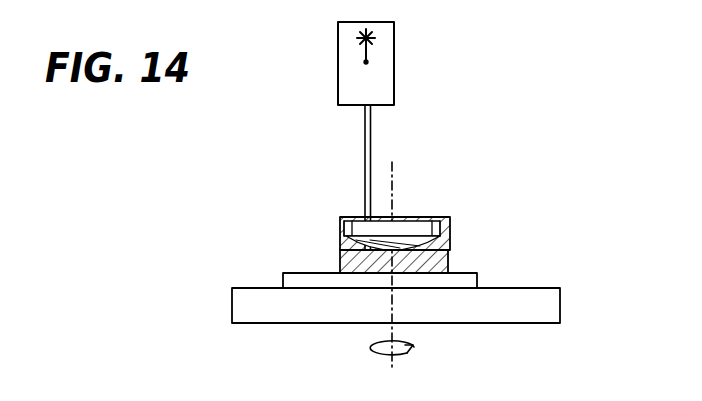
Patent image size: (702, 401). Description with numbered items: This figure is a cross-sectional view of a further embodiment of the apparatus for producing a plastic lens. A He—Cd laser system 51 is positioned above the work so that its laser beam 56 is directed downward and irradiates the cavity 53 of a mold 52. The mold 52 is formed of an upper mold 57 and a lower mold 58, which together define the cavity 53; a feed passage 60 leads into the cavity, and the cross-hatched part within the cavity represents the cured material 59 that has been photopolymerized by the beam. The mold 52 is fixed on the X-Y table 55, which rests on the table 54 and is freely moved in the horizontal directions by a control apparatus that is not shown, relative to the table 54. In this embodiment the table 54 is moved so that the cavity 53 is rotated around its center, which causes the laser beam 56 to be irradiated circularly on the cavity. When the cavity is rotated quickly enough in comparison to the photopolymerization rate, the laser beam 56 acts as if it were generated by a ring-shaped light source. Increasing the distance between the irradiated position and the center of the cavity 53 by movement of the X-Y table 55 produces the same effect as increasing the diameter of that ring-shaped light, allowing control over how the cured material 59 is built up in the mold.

The He-Cd laser system 51 is at (385, 48).
The laser beam 56 is at (370, 139).
The mold 52 is at (287, 190).
The feed passage 60 is at (340, 226).
The cured material 59 is at (342, 245).
The upper mold 57 is at (436, 217).
The lower mold 58 is at (450, 260).
The X-Y table 55 is at (478, 280).
The table 54 is at (560, 290).
The cavity 53 is at (437, 272).